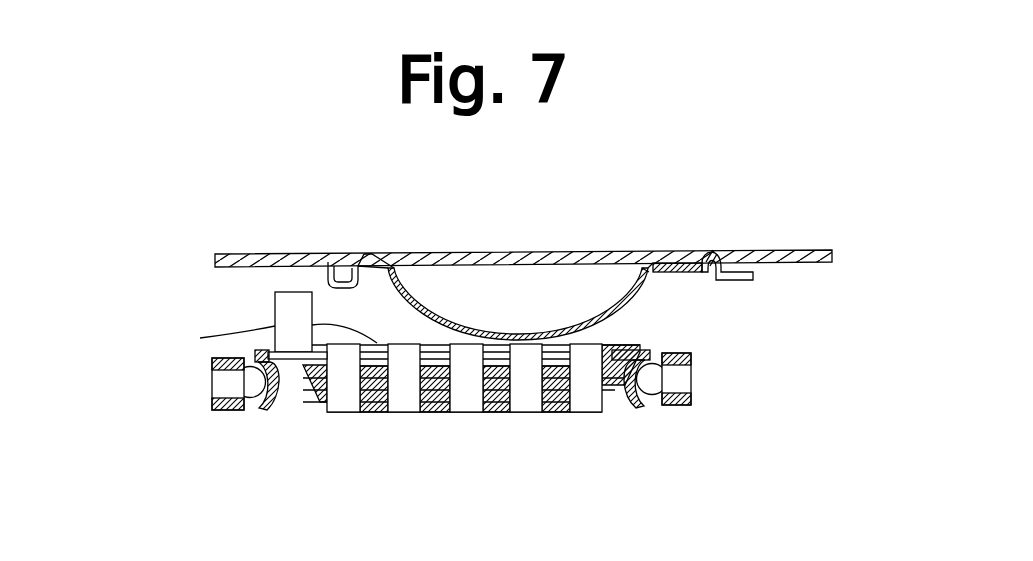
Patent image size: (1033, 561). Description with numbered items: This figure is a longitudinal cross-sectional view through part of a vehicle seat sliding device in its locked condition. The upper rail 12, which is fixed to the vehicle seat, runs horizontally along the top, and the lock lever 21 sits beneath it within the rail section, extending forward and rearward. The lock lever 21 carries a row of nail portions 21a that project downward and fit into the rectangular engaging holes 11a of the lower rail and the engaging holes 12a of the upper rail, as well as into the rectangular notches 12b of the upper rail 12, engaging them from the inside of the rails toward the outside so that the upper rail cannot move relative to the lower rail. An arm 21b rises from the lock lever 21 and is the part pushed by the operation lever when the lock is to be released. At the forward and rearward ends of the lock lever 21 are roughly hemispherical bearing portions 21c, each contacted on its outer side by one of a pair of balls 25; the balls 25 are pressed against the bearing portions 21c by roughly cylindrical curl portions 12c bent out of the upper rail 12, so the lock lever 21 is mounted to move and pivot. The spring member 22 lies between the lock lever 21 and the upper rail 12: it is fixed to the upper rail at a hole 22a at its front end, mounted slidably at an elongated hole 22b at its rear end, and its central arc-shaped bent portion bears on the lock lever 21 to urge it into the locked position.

The upper rail 12 is at (515, 260).
The spring member 22 is at (633, 294).
The hole 22a is at (362, 262).
The elongated hole 22b is at (687, 262).
The lock lever 21 is at (275, 326).
The nail portions 21a is at (467, 405).
The arm 21b is at (285, 307).
The bearing portions 21c is at (278, 410).
The balls 25 is at (245, 383).
The engaging holes 12a is at (535, 380).
The notches 12b is at (353, 412).
The curl portions 12c is at (223, 411).
The engaging holes 11a is at (422, 378).